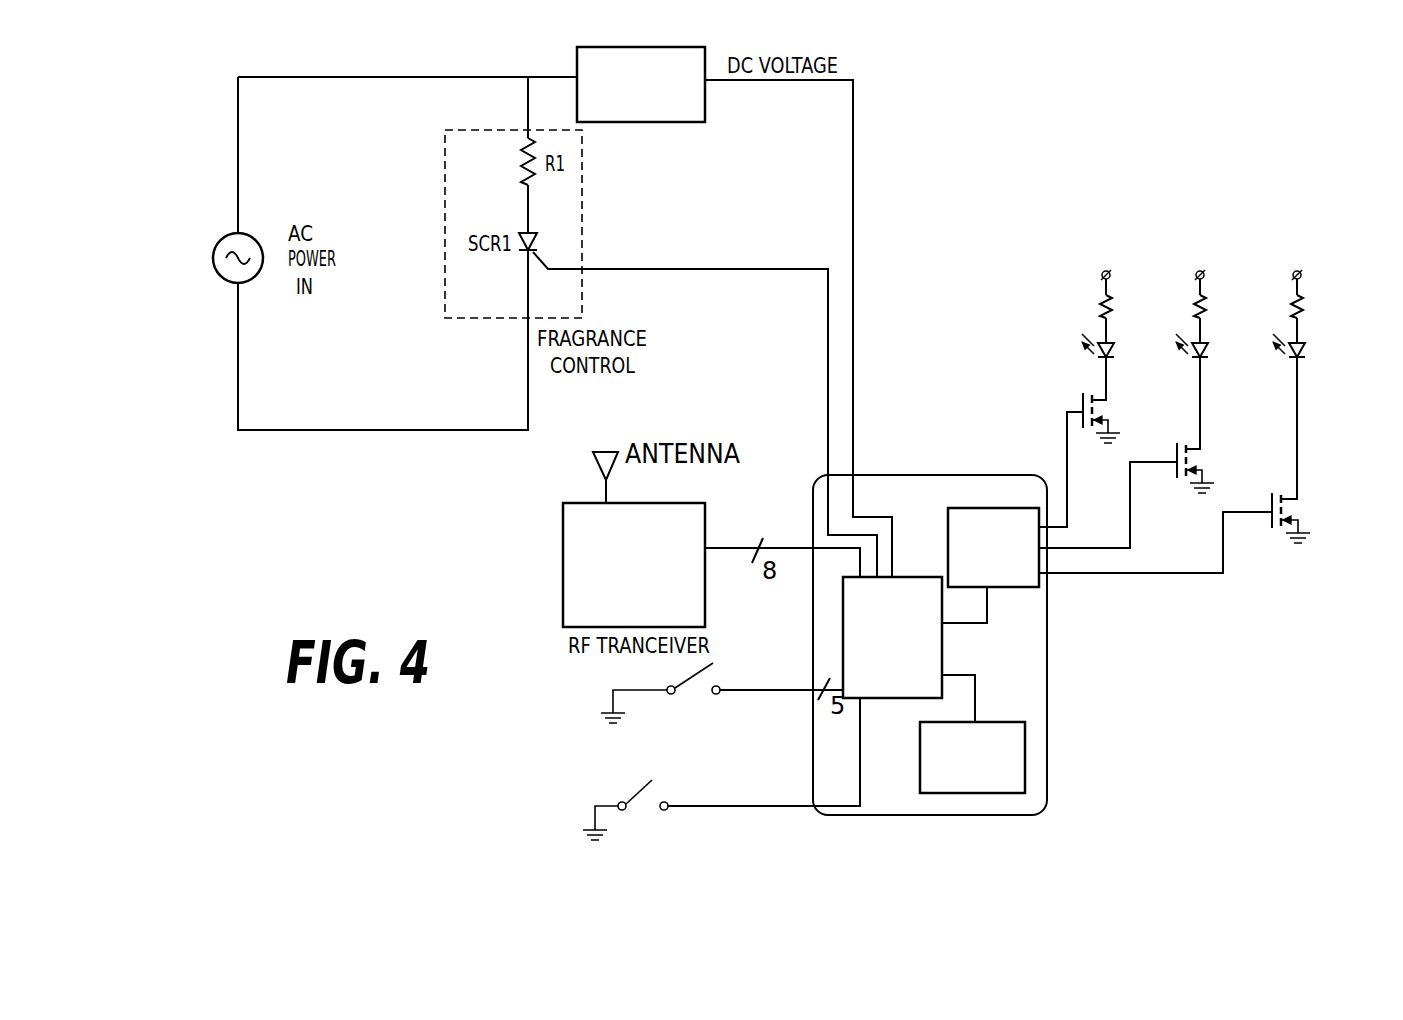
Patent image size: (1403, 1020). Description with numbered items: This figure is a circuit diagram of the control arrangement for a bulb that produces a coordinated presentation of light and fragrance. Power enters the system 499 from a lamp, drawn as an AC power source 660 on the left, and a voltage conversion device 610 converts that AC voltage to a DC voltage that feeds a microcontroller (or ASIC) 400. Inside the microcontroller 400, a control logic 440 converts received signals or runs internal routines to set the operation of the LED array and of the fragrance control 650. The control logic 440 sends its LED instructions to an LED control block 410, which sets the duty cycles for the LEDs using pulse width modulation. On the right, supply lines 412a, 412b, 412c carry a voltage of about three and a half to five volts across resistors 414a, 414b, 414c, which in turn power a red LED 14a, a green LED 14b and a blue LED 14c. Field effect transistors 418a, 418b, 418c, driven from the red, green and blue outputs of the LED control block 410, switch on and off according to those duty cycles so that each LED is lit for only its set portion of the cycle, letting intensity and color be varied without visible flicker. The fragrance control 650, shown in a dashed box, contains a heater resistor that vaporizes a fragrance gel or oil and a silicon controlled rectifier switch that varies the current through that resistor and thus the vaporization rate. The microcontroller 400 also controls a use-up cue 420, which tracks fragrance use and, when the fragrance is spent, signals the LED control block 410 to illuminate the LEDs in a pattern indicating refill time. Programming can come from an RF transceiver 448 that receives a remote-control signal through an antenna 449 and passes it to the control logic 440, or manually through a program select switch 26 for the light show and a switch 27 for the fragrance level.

The voltage conversion device 610 is at (650, 47).
The fragrance control 650 is at (586, 168).
The AC power source 660 is at (213, 258).
The antenna 449 is at (592, 462).
The RF transceiver 448 is at (707, 518).
The system 499 is at (946, 366).
The microcontroller 400 is at (943, 475).
The LED control block 410 is at (1013, 590).
The control logic 440 is at (942, 656).
The use-up cue 420 is at (920, 742).
The switch 27 is at (665, 695).
The program select switch 26 is at (615, 812).
The supply line 412a is at (1104, 270).
The supply line 412b is at (1198, 270).
The supply line 412c is at (1295, 270).
The resistor 414a is at (1113, 304).
The resistor 414b is at (1207, 304).
The resistor 414c is at (1304, 304).
The red LED 14a is at (1112, 362).
The green LED 14b is at (1206, 362).
The blue LED 14c is at (1303, 362).
The field effect transistor 418a is at (1081, 398).
The field effect transistor 418b is at (1175, 450).
The field effect transistor 418c is at (1270, 500).